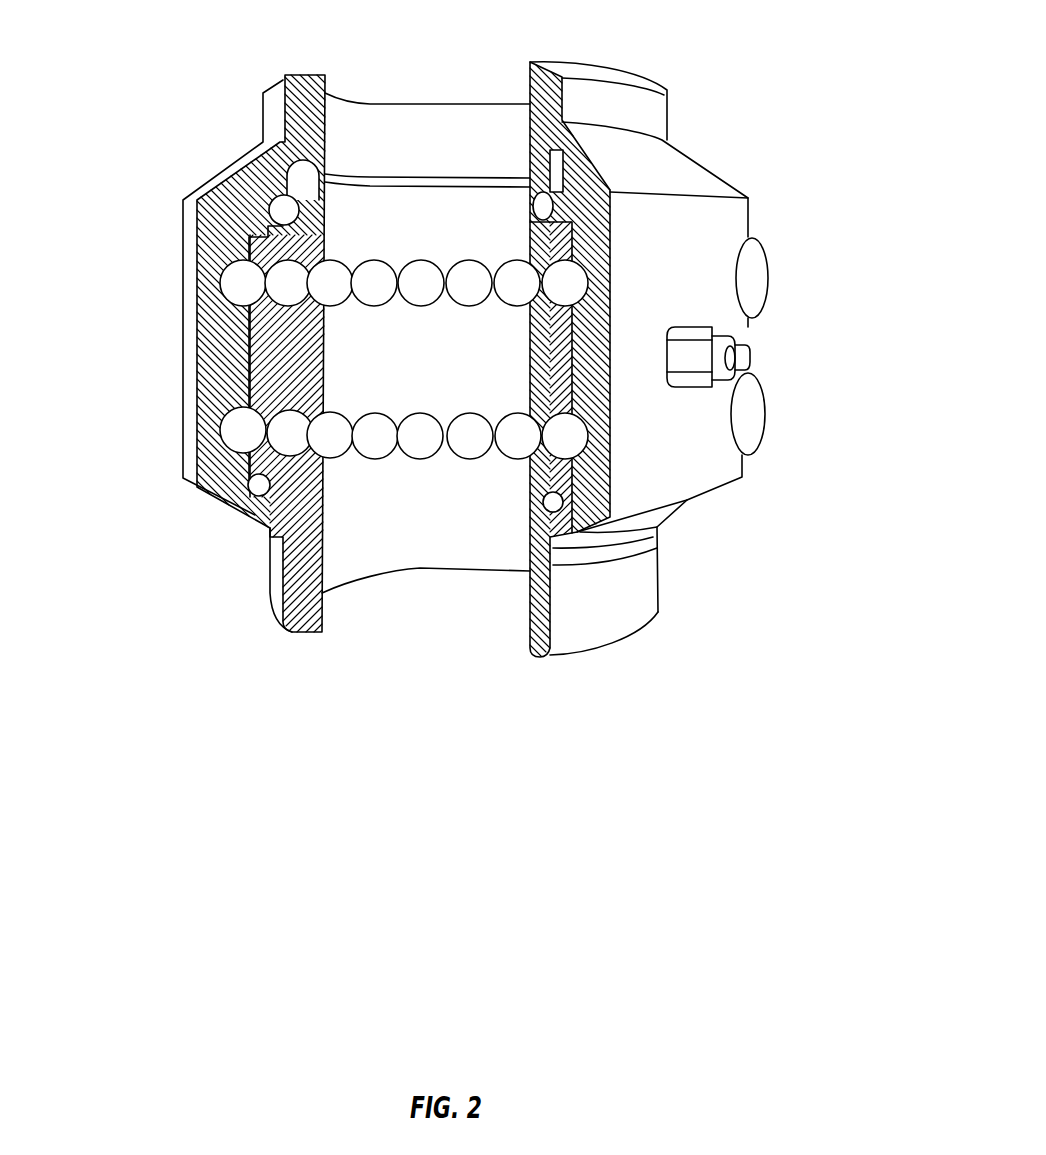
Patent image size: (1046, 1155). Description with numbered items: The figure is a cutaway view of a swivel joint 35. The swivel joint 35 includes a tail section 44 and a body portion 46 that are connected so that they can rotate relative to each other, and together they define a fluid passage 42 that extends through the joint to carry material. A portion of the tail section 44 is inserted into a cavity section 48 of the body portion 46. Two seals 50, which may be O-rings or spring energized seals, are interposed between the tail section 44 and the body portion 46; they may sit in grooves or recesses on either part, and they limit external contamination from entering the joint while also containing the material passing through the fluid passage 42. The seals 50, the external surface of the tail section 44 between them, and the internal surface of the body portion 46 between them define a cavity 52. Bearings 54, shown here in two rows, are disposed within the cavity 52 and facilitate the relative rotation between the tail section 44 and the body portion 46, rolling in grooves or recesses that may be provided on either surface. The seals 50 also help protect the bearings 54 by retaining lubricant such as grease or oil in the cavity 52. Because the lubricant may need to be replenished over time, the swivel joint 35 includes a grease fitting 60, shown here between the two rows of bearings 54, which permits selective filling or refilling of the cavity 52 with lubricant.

The swivel joint 35 is at (755, 67).
The fluid passage 42 is at (398, 606).
The tail section 44 is at (277, 593).
The body portion 46 is at (202, 188).
The cavity section 48 is at (240, 247).
The seals 50 is at (281, 205).
The cavity 52 is at (243, 357).
The bearings 54 is at (258, 275).
The grease fitting 60 is at (737, 337).